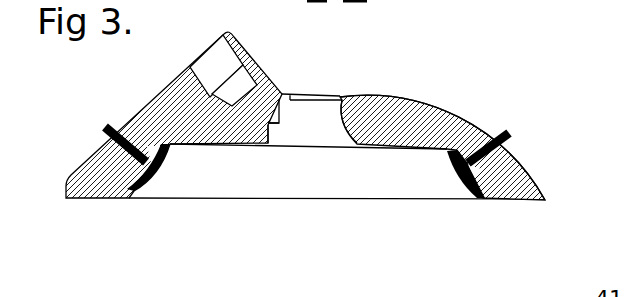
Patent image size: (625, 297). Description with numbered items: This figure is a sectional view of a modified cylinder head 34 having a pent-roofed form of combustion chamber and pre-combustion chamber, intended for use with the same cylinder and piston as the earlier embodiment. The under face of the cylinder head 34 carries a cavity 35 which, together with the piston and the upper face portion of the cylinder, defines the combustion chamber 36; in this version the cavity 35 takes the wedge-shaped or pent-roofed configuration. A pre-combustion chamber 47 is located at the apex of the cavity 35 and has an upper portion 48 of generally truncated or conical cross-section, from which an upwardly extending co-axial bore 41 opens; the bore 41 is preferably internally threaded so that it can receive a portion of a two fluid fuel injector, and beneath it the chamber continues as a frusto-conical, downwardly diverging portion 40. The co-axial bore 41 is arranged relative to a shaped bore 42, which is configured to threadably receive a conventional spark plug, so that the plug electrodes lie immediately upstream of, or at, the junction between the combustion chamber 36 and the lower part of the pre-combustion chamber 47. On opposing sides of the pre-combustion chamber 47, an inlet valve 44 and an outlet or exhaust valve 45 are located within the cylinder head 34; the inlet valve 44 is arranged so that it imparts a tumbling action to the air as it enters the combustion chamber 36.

The cylinder head 34 is at (534, 178).
The cavity 35 is at (434, 179).
The combustion chamber 36 is at (357, 241).
The frusto-conical downwardly diverging portion 40 is at (268, 145).
The co-axial bore 41 is at (312, 106).
The shaped bore 42 is at (208, 63).
The inlet valve 44 is at (107, 131).
The exhaust valve 45 is at (508, 137).
The pre-combustion chamber 47 is at (334, 120).
The upper portion 48 is at (383, 101).